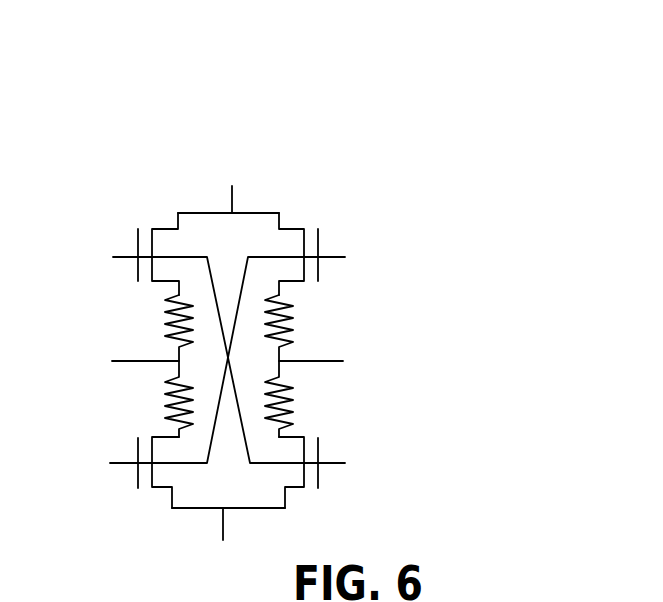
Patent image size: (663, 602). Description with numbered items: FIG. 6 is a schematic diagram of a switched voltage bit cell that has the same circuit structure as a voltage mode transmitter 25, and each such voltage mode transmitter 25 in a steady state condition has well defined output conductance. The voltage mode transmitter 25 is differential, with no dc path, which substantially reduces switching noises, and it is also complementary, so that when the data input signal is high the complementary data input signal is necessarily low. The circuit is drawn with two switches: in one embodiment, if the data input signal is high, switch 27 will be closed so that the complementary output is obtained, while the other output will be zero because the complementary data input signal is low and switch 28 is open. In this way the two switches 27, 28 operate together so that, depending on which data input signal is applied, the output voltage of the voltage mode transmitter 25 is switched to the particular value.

The voltage mode transmitter 25 is at (244, 292).
The switch 27 is at (343, 427).
The switch 28 is at (143, 427).